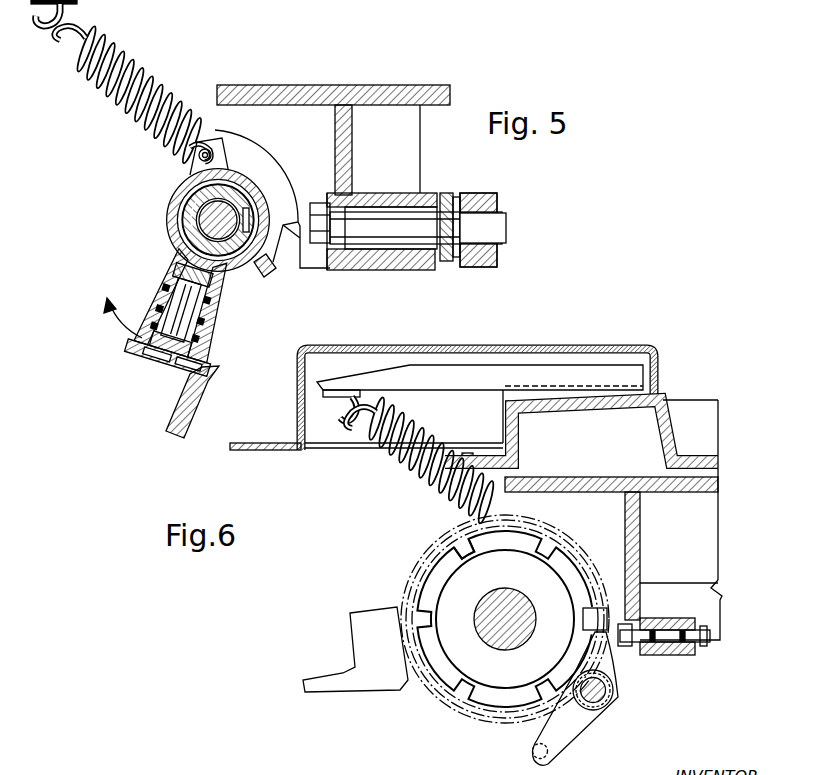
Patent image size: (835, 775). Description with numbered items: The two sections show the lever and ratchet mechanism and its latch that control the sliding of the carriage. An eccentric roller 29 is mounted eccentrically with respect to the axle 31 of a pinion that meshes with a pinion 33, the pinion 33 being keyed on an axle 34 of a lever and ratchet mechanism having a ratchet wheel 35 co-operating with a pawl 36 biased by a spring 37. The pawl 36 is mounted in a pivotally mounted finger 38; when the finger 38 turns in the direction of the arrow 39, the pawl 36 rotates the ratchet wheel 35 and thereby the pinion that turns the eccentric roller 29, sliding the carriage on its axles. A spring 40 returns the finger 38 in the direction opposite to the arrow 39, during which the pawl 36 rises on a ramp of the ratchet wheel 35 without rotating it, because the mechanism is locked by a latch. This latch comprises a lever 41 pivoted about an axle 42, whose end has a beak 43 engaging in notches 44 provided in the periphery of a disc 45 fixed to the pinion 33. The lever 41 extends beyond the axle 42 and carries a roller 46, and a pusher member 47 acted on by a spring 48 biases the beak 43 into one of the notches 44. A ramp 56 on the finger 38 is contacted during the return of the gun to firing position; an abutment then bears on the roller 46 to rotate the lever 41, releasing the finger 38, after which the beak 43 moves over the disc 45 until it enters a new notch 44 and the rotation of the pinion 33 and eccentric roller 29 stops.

In FIG. 5, the eccentric roller 29 is at (480, 184).
In FIG. 5, the axle 31 is at (388, 238).
In FIG. 6, the pinion 33 is at (466, 700).
In FIG. 5, the axle 34 is at (226, 217).
In FIG. 5, the ratchet wheel 35 is at (232, 195).
In FIG. 5, the pawl 36 is at (236, 276).
In FIG. 5, the spring 37 is at (178, 283).
In FIG. 5, the pivotally mounted finger 38 is at (200, 356).
In FIG. 6, the pivotally mounted finger 38 is at (352, 678).
In FIG. 5, the arrow 39 is at (113, 320).
In FIG. 5, the spring 40 is at (123, 112).
In FIG. 6, the spring 40 is at (397, 472).
In FIG. 6, the lever 41 is at (614, 670).
In FIG. 6, the axle 42 is at (603, 702).
In FIG. 6, the beak 43 is at (596, 618).
In FIG. 6, the notches 44 is at (468, 545).
In FIG. 6, the disc 45 is at (440, 573).
In FIG. 6, the roller 46 is at (532, 751).
In FIG. 6, the pusher member 47 is at (634, 629).
In FIG. 6, the spring 48 is at (672, 656).
In FIG. 6, the ramp 56 is at (412, 680).